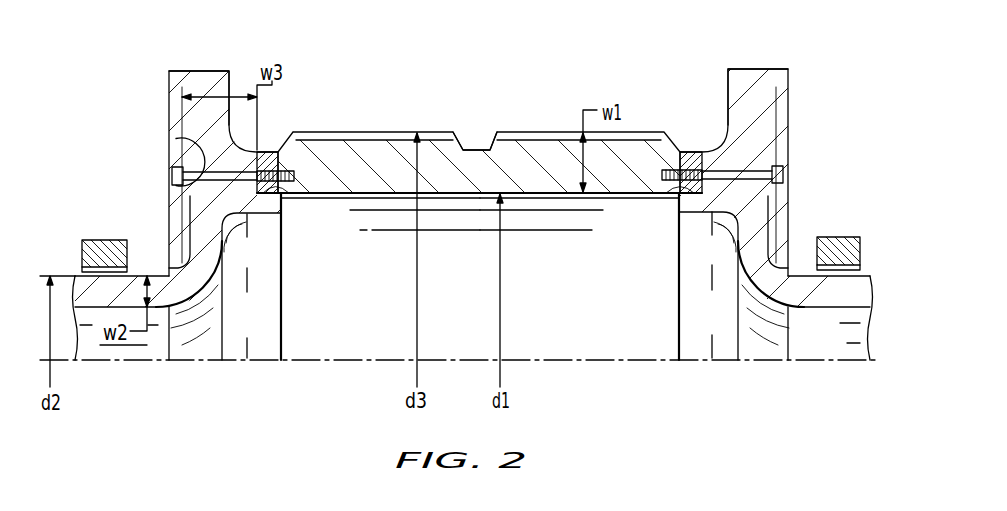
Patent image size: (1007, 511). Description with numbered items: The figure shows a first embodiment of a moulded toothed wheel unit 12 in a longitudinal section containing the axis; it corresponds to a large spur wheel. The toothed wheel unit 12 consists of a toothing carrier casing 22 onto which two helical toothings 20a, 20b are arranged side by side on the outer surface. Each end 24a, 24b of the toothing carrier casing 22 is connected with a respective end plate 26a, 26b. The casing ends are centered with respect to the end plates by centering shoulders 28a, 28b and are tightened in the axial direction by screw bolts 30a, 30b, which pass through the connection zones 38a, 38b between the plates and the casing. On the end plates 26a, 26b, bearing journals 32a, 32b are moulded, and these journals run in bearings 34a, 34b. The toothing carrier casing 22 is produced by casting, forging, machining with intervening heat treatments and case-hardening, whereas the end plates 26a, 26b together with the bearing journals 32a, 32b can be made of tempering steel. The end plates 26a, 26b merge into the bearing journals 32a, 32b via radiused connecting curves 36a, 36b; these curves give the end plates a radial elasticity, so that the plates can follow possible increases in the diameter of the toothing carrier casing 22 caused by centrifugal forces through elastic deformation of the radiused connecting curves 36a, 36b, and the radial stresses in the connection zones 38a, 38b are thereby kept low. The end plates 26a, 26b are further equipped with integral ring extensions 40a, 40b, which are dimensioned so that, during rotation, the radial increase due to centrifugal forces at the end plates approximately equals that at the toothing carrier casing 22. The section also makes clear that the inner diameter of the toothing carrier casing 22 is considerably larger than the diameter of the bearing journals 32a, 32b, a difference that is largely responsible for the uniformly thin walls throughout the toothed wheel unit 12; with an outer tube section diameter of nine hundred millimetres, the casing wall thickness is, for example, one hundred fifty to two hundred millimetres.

The toothed wheel unit 12 is at (418, 61).
The helical toothing 20a is at (382, 132).
The helical toothing 20b is at (533, 132).
The toothing carrier casing 22 is at (476, 158).
The end of the toothing carrier casing 24a is at (289, 197).
The end of the toothing carrier casing 24b is at (676, 194).
The end plate 26a is at (173, 95).
The end plate 26b is at (783, 107).
The centering shoulder 28a is at (265, 215).
The centering shoulder 28b is at (692, 213).
The screw bolt 30a is at (168, 140).
The screw bolt 30b is at (757, 165).
The bearing journal 32a is at (74, 290).
The bearing journal 32b is at (816, 300).
The bearing 34a is at (91, 240).
The bearing 34b is at (838, 237).
The radiused connecting curve 36a is at (222, 298).
The radiused connecting curve 36b is at (738, 297).
The connection zone 38a is at (267, 155).
The connection zone 38b is at (693, 152).
The integral ring extension 40a is at (197, 78).
The integral ring extension 40b is at (745, 75).